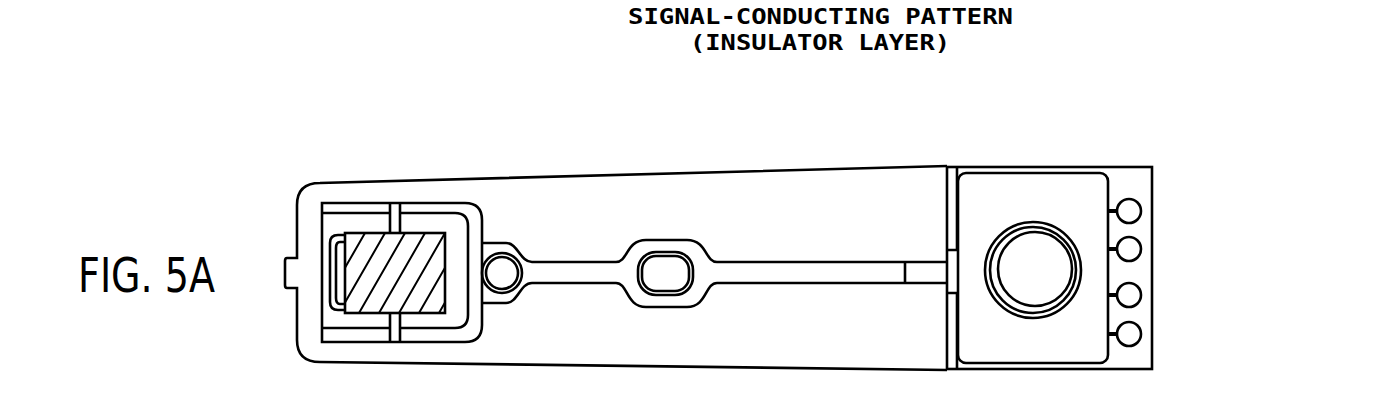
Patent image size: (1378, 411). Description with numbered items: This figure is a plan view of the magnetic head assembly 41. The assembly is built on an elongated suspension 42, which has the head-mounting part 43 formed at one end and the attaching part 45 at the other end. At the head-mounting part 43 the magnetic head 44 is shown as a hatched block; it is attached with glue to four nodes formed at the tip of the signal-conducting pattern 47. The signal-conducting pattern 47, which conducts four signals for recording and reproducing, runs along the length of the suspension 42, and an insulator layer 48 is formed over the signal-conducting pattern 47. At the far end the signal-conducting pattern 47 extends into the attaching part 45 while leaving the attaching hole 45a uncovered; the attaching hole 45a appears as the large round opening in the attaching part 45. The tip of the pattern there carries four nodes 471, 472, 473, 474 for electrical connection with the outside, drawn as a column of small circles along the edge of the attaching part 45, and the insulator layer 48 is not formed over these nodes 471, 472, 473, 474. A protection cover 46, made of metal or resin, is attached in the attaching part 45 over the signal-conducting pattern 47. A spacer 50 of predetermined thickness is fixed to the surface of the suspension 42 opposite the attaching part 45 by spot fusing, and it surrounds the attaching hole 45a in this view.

The magnetic head assembly 41 is at (631, 98).
The suspension 42 is at (747, 168).
The head-mounting part 43 is at (336, 317).
The magnetic head 44 is at (366, 243).
The attaching part 45 is at (1045, 166).
The attaching hole 45a is at (1053, 232).
The protection cover 46 is at (975, 188).
The signal-conducting pattern 47 is at (714, 179).
The insulator layer 48 is at (778, 270).
The node 471 is at (1132, 212).
The node 472 is at (1132, 250).
The node 473 is at (1132, 296).
The node 474 is at (1132, 334).
The spacer 50 is at (1040, 296).